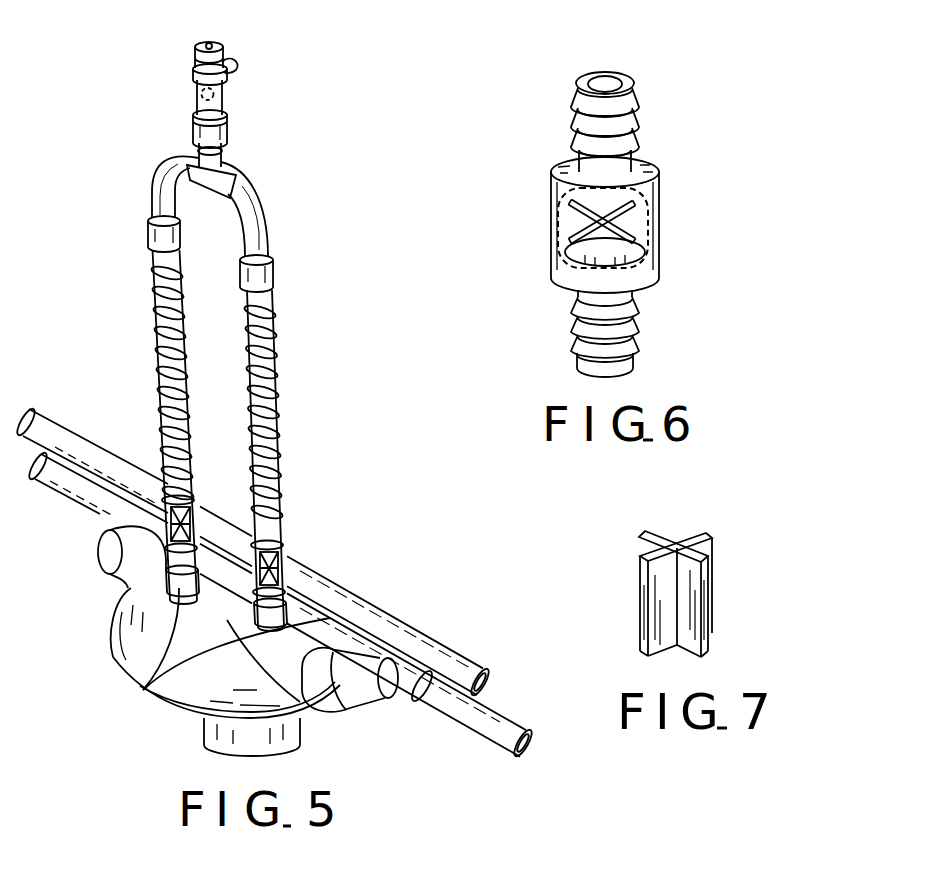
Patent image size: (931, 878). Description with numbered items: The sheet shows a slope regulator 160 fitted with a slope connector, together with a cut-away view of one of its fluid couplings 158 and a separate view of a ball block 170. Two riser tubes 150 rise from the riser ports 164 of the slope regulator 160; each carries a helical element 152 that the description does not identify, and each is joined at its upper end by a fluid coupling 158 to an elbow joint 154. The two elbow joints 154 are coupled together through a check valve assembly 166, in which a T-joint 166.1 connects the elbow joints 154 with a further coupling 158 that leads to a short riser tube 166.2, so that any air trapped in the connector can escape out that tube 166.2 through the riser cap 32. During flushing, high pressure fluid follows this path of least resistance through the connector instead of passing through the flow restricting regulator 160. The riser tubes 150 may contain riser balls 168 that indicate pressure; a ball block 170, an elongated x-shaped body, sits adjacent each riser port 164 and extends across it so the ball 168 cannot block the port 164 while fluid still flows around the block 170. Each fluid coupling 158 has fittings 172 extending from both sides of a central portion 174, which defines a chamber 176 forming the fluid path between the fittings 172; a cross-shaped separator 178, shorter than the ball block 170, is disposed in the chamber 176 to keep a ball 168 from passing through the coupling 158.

In FIG. 5, the riser cap 32 is at (196, 44).
In FIG. 5, the riser tubes 150 is at (157, 257).
In FIG. 5, the helical reinforcing coil 152 is at (158, 296).
In FIG. 5, the elbow joints 154 is at (162, 174).
In FIG. 5, the fluid couplings 158 is at (227, 126).
In FIG. 6, the fluid couplings 158 is at (622, 220).
In FIG. 5, the slope regulator 160 is at (190, 722).
In FIG. 5, the riser ports 164 is at (147, 690).
In FIG. 5, the check valve assembly 166 is at (188, 79).
In FIG. 5, the T-joint 166.1 is at (205, 188).
In FIG. 5, the riser tube 166.2 is at (224, 84).
In FIG. 5, the riser balls 168 is at (201, 95).
In FIG. 5, the ball block 170 is at (193, 520).
In FIG. 7, the ball block 170 is at (720, 580).
In FIG. 6, the fittings 172 is at (623, 121).
In FIG. 6, the central portion 174 is at (653, 192).
In FIG. 6, the chamber 176 is at (570, 268).
In FIG. 6, the separator 178 is at (594, 239).